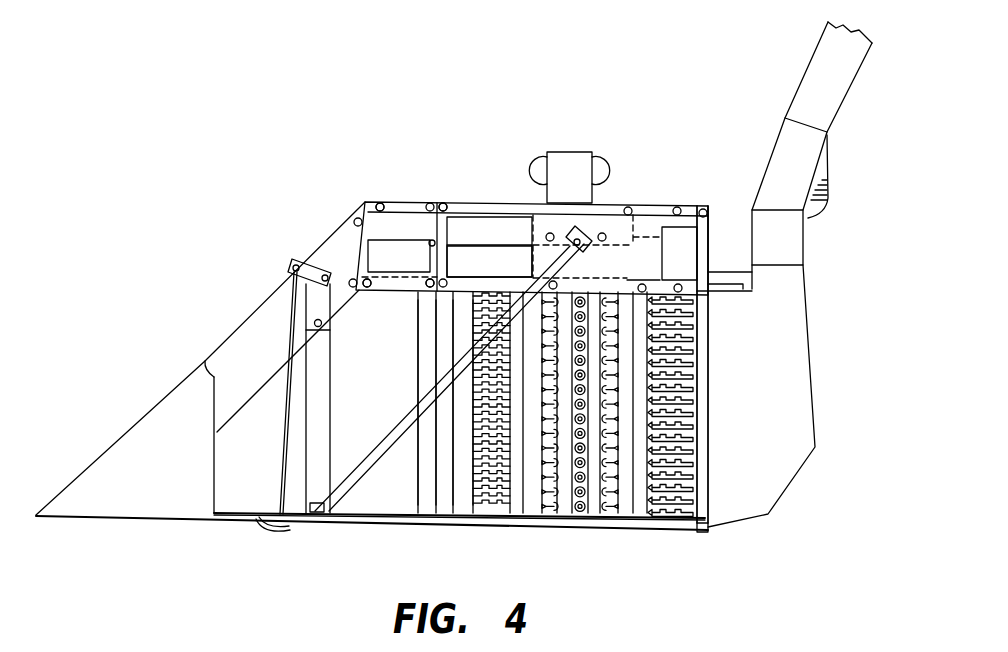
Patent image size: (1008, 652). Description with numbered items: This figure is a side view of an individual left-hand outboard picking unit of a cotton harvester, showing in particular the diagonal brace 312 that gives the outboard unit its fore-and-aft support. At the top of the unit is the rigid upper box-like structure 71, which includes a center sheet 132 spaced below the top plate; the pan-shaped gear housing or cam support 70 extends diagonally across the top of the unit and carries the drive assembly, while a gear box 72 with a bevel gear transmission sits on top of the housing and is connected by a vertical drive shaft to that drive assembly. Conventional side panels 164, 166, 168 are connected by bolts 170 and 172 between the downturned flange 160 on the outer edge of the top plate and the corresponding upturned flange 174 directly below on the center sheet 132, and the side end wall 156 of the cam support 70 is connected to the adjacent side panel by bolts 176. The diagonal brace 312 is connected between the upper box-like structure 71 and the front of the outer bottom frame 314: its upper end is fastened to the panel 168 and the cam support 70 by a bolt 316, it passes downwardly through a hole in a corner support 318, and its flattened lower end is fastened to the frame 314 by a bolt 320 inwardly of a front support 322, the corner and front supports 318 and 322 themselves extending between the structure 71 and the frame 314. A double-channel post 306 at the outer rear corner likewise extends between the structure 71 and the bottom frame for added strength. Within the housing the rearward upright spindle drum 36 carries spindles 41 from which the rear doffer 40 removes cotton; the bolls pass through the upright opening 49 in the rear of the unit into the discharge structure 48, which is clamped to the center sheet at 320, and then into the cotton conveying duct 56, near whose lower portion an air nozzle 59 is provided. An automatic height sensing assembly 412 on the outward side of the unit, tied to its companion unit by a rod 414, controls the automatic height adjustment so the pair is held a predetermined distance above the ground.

The upper box-like structure 71 is at (356, 180).
The gear housing or cam support 70 is at (494, 245).
The gear box 72 is at (583, 190).
The side panel 164 is at (411, 240).
The side panel 166 is at (480, 282).
The side end wall 156 is at (679, 253).
The side panel 168 is at (657, 277).
The bolts 170 is at (443, 203).
The bolts 172 is at (426, 289).
The bolts 176 is at (605, 233).
The bolt 316 is at (581, 246).
The downturned flange 160 is at (313, 268).
The rod 414 is at (327, 288).
The front support 322 is at (303, 412).
The diagonal brace 312 is at (396, 424).
The corner support 318 is at (422, 470).
The center sheet 132 is at (462, 294).
The bolt 320 is at (313, 505).
The automatic height sensing assembly 412 is at (270, 528).
The outer bottom frame 314 is at (357, 522).
The upturned flange 174 is at (692, 288).
The rearward upright picking spindle drum 36 is at (563, 522).
The spindles 41 is at (640, 516).
The rear doffing assembly 40 is at (680, 513).
The upright opening 49 is at (703, 418).
The double-channel post 306 is at (702, 528).
The discharge structure 48 is at (807, 360).
The cotton conveying duct 56 is at (803, 80).
The air nozzle 59 is at (827, 174).